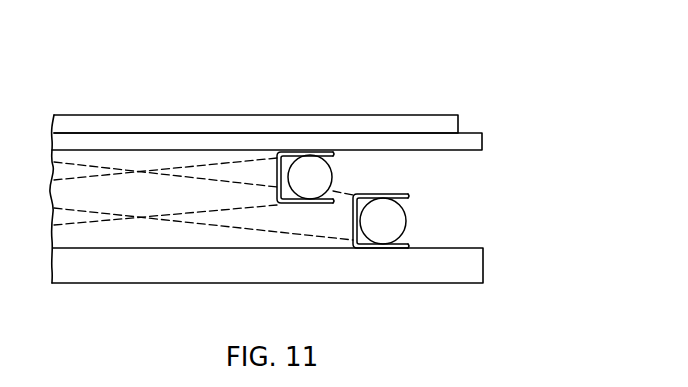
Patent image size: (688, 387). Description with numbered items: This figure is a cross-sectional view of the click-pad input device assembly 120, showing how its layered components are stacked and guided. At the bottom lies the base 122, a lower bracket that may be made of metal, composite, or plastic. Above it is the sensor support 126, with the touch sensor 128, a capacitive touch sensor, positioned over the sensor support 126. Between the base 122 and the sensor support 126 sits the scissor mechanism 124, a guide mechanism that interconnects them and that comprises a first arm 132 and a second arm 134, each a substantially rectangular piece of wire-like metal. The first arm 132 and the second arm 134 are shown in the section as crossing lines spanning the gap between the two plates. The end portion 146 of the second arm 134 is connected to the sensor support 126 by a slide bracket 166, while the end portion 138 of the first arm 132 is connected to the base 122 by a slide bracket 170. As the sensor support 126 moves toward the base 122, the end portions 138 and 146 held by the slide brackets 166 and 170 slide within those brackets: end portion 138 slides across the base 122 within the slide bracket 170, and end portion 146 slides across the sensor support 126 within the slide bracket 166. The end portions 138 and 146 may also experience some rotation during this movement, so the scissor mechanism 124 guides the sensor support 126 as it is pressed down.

The input device assembly 120 is at (493, 98).
The base 122 is at (107, 277).
The scissor mechanism 124 is at (481, 189).
The sensor support 126 is at (122, 142).
The touch sensor 128 is at (170, 117).
The first arm 132 is at (273, 233).
The second arm 134 is at (222, 163).
The end portion 138 is at (385, 230).
The end portion 146 is at (310, 172).
The slide bracket 166 is at (335, 154).
The slide bracket 170 is at (407, 243).